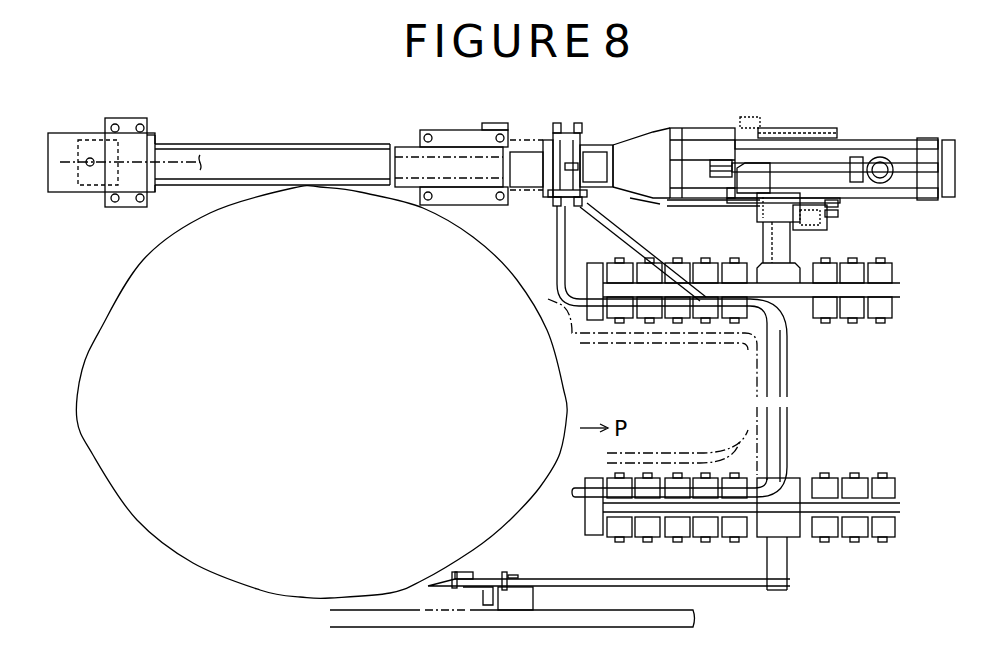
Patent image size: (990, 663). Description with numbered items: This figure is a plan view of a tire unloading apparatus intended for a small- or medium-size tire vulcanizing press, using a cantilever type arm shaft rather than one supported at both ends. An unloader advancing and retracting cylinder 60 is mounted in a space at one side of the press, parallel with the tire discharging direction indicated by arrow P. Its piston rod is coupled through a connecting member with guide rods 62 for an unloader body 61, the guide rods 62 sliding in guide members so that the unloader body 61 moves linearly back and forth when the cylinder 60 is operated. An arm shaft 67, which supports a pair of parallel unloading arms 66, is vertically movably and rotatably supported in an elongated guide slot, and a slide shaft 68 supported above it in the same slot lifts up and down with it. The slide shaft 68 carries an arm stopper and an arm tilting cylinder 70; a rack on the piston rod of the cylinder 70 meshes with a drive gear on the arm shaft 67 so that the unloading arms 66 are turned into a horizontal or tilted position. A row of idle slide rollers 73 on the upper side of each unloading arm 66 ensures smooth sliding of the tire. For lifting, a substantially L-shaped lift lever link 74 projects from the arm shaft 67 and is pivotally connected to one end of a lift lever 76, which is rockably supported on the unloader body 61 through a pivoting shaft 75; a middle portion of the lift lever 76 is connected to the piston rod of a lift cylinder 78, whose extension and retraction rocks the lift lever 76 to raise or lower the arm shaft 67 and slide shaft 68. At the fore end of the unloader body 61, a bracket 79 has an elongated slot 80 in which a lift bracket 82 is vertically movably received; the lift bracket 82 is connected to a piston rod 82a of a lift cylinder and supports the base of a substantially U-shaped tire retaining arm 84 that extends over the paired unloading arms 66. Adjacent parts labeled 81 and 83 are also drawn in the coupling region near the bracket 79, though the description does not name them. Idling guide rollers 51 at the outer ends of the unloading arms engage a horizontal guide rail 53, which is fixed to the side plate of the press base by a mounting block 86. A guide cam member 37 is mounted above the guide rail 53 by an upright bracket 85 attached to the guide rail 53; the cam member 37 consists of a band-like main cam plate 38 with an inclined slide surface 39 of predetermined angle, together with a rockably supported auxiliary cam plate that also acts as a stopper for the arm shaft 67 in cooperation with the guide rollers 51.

The unloader advancing and retracting cylinder 60 is at (262, 158).
The unloader body 61 is at (846, 140).
The guide rods 62 is at (688, 192).
The unloading arms 66 is at (685, 322).
The arm shaft 67 is at (792, 436).
The slide shaft 68 is at (828, 208).
The arm tilting cylinder 70 is at (822, 224).
The idle slide rollers 73 is at (650, 325).
The lift lever link 74 is at (713, 192).
The pivoting shaft 75 is at (936, 160).
The lift lever 76 is at (865, 178).
The lift cylinder 78 is at (946, 152).
The bracket 79 is at (638, 198).
The elongated slot 80 is at (590, 196).
The clamp 81 is at (546, 196).
The lift bracket 82 is at (612, 152).
The piston rod 82a is at (580, 164).
The flange 83 is at (555, 212).
The tire retaining arm 84 is at (557, 274).
The upright bracket 85 is at (470, 612).
The mounting block 86 is at (533, 601).
The guide cam member 37 is at (581, 578).
The main cam plate 38 is at (509, 576).
The inclined slide surface 39 is at (520, 576).
The idling guide rollers 51 is at (790, 586).
The guide rail 53 is at (738, 578).